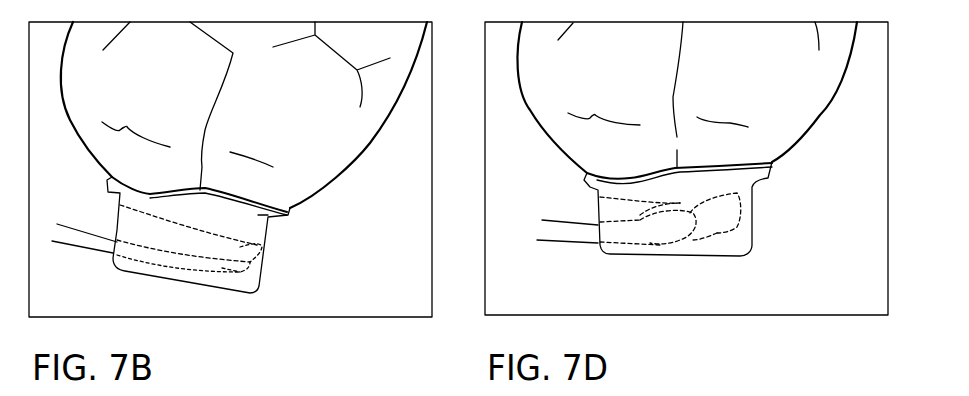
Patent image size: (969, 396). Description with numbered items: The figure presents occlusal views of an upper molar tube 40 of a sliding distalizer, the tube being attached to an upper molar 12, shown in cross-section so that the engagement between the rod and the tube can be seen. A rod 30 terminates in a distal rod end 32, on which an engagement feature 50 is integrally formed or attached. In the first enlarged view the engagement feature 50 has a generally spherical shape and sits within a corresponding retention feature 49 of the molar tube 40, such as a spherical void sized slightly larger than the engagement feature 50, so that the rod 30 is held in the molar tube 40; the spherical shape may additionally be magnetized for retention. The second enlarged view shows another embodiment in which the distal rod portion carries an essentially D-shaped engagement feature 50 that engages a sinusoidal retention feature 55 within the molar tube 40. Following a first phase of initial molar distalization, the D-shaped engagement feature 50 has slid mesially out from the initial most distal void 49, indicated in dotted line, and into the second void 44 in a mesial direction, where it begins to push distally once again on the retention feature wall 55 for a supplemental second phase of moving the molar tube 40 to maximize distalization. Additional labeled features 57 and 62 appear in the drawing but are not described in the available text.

In FIG. 7B, the upper molar 12 is at (289, 147).
In FIG. 7D, the upper molar 12 is at (756, 111).
In FIG. 7B, the rod 30 is at (67, 237).
In FIG. 7D, the rod 30 is at (573, 230).
In FIG. 7B, the distal rod end 32 is at (165, 255).
In FIG. 7D, the distal rod end 32 is at (628, 230).
In FIG. 7B, the upper molar tube 40 is at (288, 216).
In FIG. 7D, the upper molar tube 40 is at (737, 242).
In FIG. 7B, the second void 44 is at (187, 245).
In FIG. 7D, the second void 44 is at (643, 215).
In FIG. 7B, the retention feature 49 is at (258, 247).
In FIG. 7D, the retention feature 49 is at (737, 200).
In FIG. 7B, the engagement feature 50 is at (247, 262).
In FIG. 7D, the engagement feature 50 is at (672, 228).
In FIG. 7D, the sinusoidal retention feature 55 is at (655, 203).
In FIG. 7D, the connector 57 is at (715, 235).
In FIG. 7B, the fixation member 62 is at (228, 272).